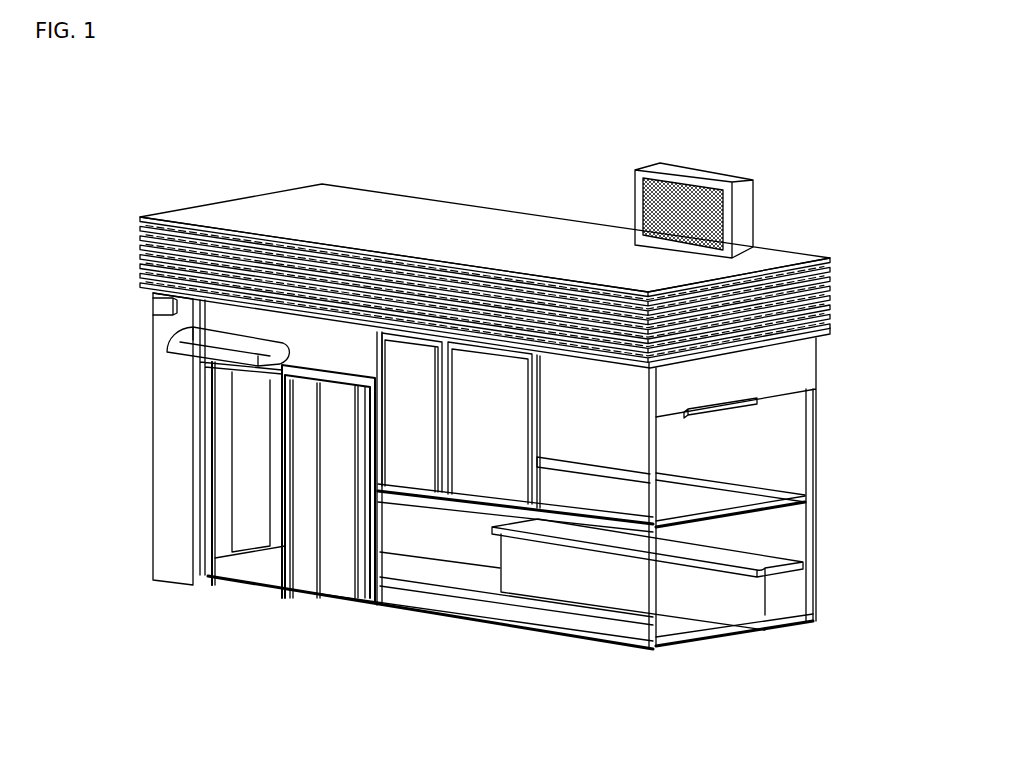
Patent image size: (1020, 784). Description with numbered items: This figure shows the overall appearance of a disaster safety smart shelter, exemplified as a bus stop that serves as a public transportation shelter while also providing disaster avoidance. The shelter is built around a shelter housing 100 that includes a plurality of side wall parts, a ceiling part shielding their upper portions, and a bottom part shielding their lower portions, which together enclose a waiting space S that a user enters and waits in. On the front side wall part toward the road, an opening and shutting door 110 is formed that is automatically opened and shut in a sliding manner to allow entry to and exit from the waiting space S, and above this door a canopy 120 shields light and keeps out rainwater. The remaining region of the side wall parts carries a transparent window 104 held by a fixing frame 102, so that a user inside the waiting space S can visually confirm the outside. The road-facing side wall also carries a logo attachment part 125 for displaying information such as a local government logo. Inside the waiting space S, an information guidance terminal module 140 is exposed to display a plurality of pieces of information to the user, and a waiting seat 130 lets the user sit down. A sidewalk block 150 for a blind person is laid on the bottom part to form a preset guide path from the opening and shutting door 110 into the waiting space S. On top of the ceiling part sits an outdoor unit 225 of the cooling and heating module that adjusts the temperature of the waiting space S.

The shelter housing 100 is at (137, 464).
The fixing frame 102 is at (585, 523).
The window 104 is at (785, 533).
The opening and shutting door 110 is at (285, 503).
The canopy 120 is at (172, 331).
The logo attachment part 125 is at (153, 306).
The waiting seat 130 is at (730, 573).
The information guidance terminal module 140 is at (745, 413).
The sidewalk block for a blind person 150 is at (448, 600).
The outdoor unit 225 is at (702, 176).
The waiting space S is at (430, 520).